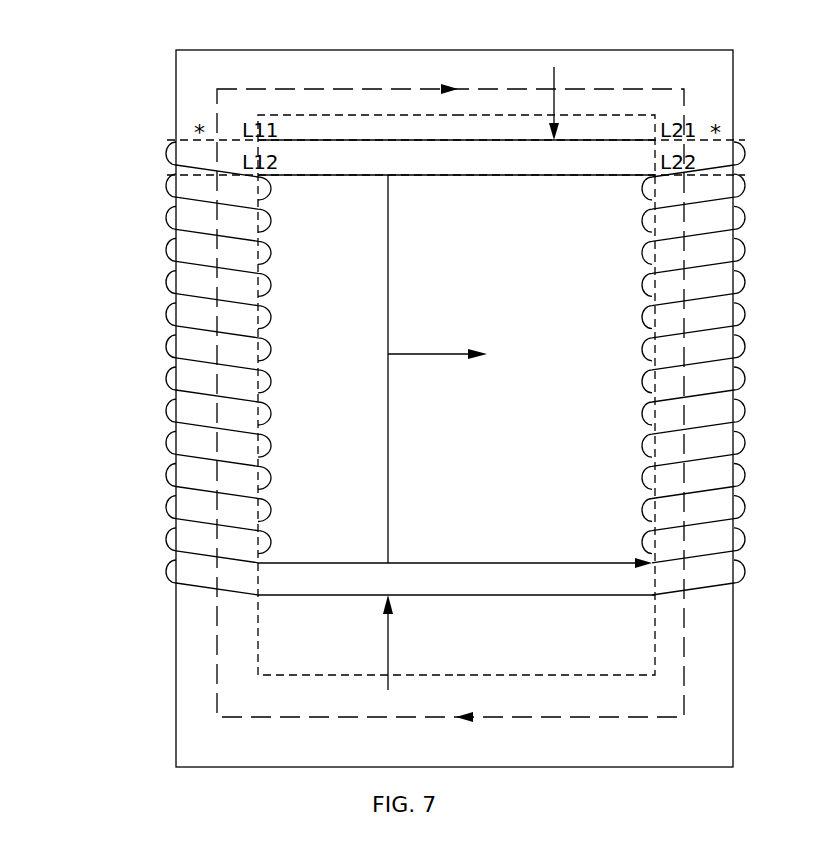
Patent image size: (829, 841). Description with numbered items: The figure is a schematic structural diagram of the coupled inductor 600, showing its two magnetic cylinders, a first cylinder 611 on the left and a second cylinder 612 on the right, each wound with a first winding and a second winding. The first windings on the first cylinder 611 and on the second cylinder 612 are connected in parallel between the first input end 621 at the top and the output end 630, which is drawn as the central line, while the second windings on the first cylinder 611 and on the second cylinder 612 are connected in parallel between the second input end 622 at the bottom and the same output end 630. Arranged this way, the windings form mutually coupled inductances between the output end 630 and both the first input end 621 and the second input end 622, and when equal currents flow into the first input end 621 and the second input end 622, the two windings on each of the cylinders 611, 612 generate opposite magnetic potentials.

The coupled inductor 600 is at (122, 106).
The first cylinder 611 is at (258, 646).
The second cylinder 612 is at (655, 648).
The first input end 621 is at (450, 388).
The second input end 622 is at (385, 642).
The output end 630 is at (437, 369).